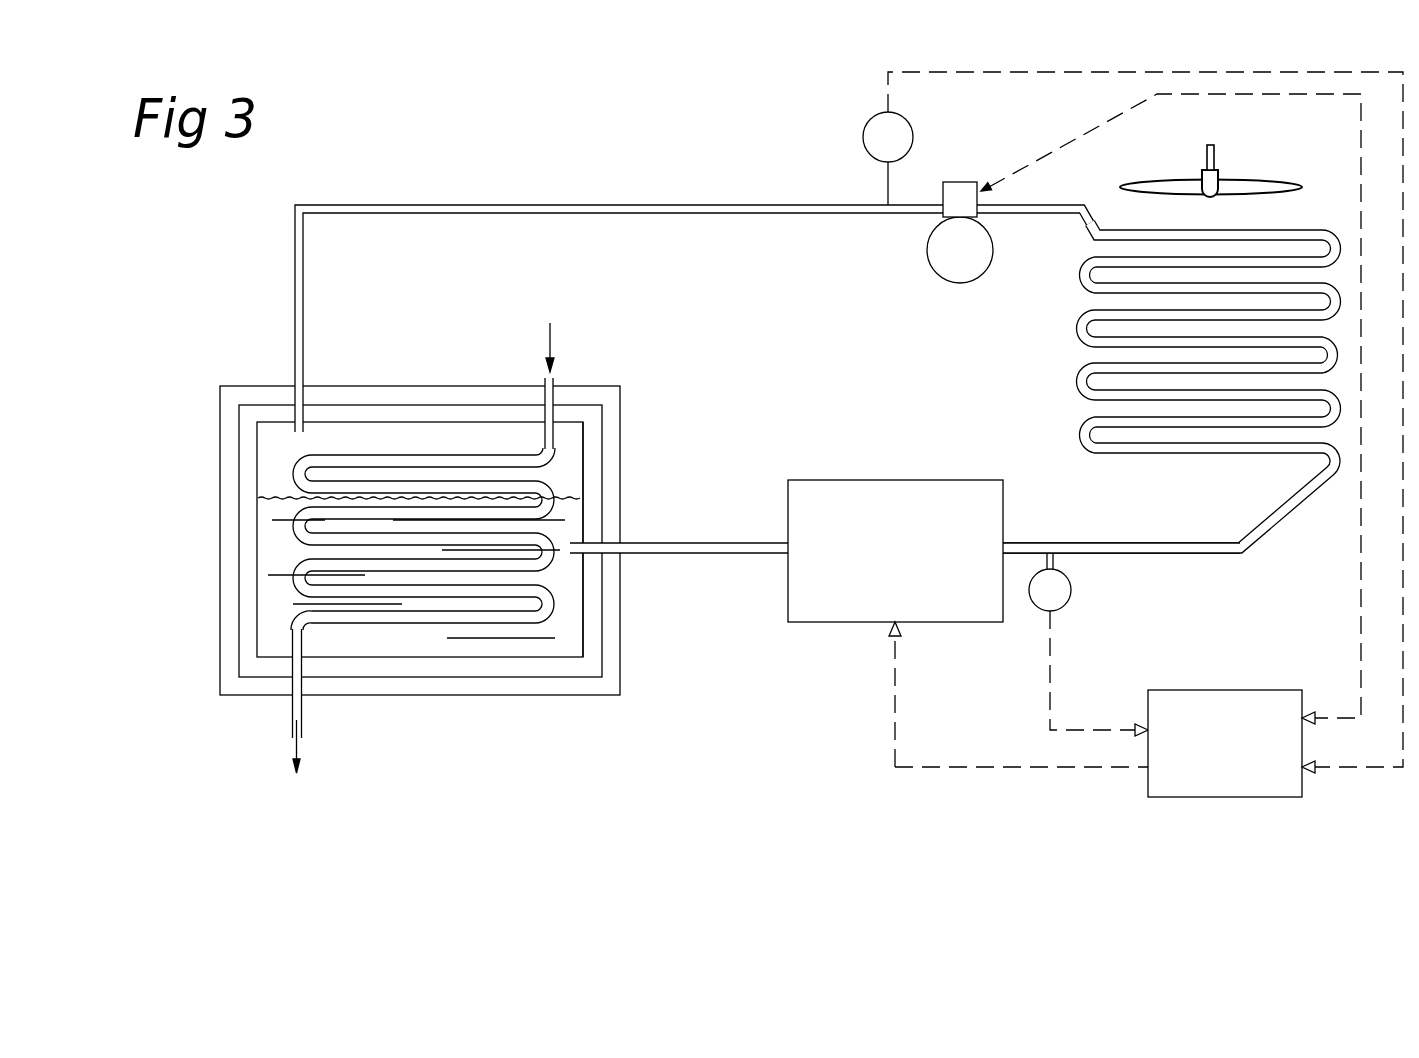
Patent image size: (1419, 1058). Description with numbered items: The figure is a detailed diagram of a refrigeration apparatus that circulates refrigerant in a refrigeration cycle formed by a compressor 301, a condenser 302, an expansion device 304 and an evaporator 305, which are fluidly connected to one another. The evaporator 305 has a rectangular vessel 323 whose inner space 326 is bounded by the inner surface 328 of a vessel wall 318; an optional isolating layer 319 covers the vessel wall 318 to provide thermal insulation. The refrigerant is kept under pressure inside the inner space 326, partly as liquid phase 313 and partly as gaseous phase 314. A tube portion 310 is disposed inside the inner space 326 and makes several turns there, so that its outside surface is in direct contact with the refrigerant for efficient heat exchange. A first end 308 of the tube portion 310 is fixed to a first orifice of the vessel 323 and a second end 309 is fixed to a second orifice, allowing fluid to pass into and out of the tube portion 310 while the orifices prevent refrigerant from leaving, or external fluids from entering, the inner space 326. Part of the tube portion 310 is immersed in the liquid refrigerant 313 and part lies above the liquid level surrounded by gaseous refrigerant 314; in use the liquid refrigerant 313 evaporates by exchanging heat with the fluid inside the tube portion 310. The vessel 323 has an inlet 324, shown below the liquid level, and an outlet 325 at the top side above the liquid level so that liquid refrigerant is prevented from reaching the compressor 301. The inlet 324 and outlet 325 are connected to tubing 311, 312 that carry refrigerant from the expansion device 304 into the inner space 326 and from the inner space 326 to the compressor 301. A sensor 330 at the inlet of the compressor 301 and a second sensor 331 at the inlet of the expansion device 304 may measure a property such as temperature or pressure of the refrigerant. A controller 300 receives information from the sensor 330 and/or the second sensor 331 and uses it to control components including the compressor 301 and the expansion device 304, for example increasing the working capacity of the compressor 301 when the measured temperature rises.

The controller 300 is at (1228, 778).
The compressor 301 is at (962, 192).
The condenser 302 is at (1247, 190).
The expansion device 304 is at (945, 603).
The evaporator 305 is at (431, 522).
The first end of the tube portion 308 is at (553, 384).
The second end of the tube portion 309 is at (303, 700).
The tube portion 310 is at (418, 617).
The tubing 311 is at (745, 548).
The tubing 312 is at (823, 212).
The liquid phase refrigerant 313 is at (563, 532).
The gaseous phase refrigerant 314 is at (568, 475).
The vessel wall 318 is at (372, 415).
The isolating layer 319 is at (343, 395).
The vessel 323 is at (588, 695).
The inlet 324 is at (622, 554).
The outlet 325 is at (293, 387).
The inner space 326 is at (280, 447).
The inner surface 328 is at (585, 442).
The sensor 330 is at (900, 140).
The second sensor 331 is at (1070, 593).